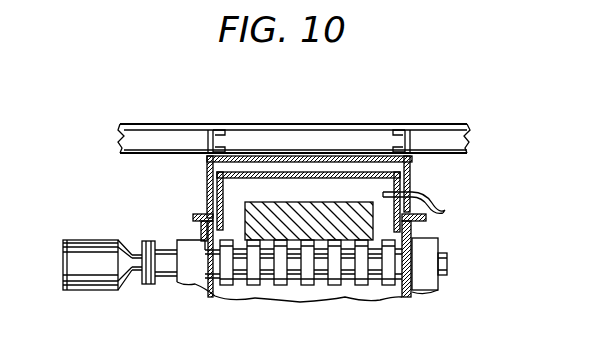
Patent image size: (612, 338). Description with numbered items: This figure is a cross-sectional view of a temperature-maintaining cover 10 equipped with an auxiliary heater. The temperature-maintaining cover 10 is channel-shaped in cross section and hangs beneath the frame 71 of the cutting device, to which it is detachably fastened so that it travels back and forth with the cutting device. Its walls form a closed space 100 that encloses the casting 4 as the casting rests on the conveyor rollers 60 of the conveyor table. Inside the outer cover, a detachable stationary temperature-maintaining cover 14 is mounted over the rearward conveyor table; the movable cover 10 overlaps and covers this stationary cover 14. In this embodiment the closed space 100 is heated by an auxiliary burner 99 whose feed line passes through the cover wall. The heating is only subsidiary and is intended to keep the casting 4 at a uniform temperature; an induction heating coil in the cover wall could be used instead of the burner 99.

The frame 71 is at (260, 138).
The casting 4 is at (292, 203).
The temperature-maintaining cover 10 is at (317, 156).
The stationary temperature-maintaining cover 14 is at (360, 174).
The closed space 100 is at (233, 193).
The auxiliary burner 99 is at (430, 192).
The conveyor rollers 60 is at (308, 264).